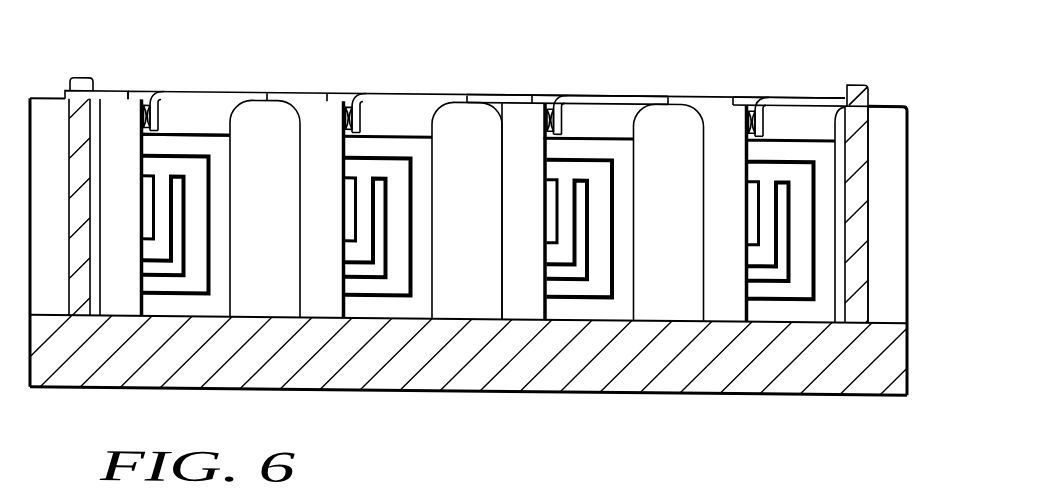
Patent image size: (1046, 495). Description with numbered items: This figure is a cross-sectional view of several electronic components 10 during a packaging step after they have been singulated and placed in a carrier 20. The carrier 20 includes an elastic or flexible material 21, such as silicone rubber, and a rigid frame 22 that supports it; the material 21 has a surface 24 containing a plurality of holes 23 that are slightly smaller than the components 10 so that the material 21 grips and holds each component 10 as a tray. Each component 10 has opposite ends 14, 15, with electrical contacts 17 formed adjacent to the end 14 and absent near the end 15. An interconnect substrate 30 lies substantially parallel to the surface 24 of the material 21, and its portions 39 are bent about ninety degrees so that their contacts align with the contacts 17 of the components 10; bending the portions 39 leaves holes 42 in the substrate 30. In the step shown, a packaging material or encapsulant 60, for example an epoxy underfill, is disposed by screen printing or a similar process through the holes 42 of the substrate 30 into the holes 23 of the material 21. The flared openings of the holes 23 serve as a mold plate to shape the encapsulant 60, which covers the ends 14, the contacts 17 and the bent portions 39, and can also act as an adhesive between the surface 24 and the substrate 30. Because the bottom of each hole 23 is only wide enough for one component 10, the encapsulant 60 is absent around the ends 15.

The electronic component 10 is at (447, 181).
The end 14 is at (521, 102).
The end 15 is at (520, 312).
The electrical contact 17 is at (343, 117).
The carrier 20 is at (533, 422).
The elastic or flexible material 21 is at (897, 106).
The rigid frame 22 is at (810, 375).
The hole 23 is at (210, 116).
The surface 24 is at (47, 96).
The interconnect substrate 30 is at (475, 91).
The portion 39 is at (375, 97).
The hole 42 is at (747, 91).
The encapsulant 60 is at (606, 95).